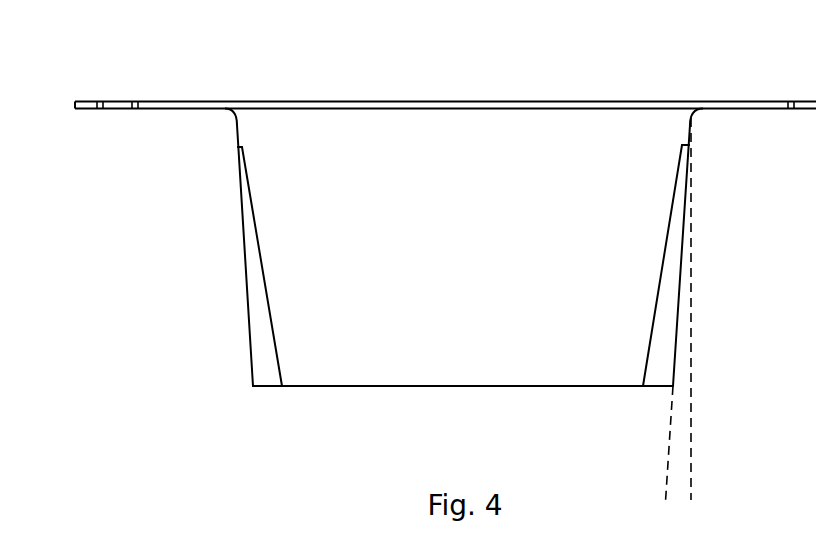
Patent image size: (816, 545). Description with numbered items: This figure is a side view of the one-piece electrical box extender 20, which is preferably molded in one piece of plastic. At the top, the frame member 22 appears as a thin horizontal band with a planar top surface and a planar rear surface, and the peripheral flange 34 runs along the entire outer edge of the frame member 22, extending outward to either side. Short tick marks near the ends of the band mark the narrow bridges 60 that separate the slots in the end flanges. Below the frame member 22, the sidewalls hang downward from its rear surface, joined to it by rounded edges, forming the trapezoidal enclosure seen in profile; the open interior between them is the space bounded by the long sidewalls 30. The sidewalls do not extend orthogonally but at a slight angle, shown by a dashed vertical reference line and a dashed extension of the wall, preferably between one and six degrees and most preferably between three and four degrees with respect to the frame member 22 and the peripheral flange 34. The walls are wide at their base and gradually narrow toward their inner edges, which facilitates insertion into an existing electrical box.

The box extender 20 is at (202, 283).
The frame member 22 is at (684, 107).
The long sidewalls 30 is at (449, 249).
The peripheral flange 34 is at (756, 104).
The narrow bridges 60 is at (132, 104).